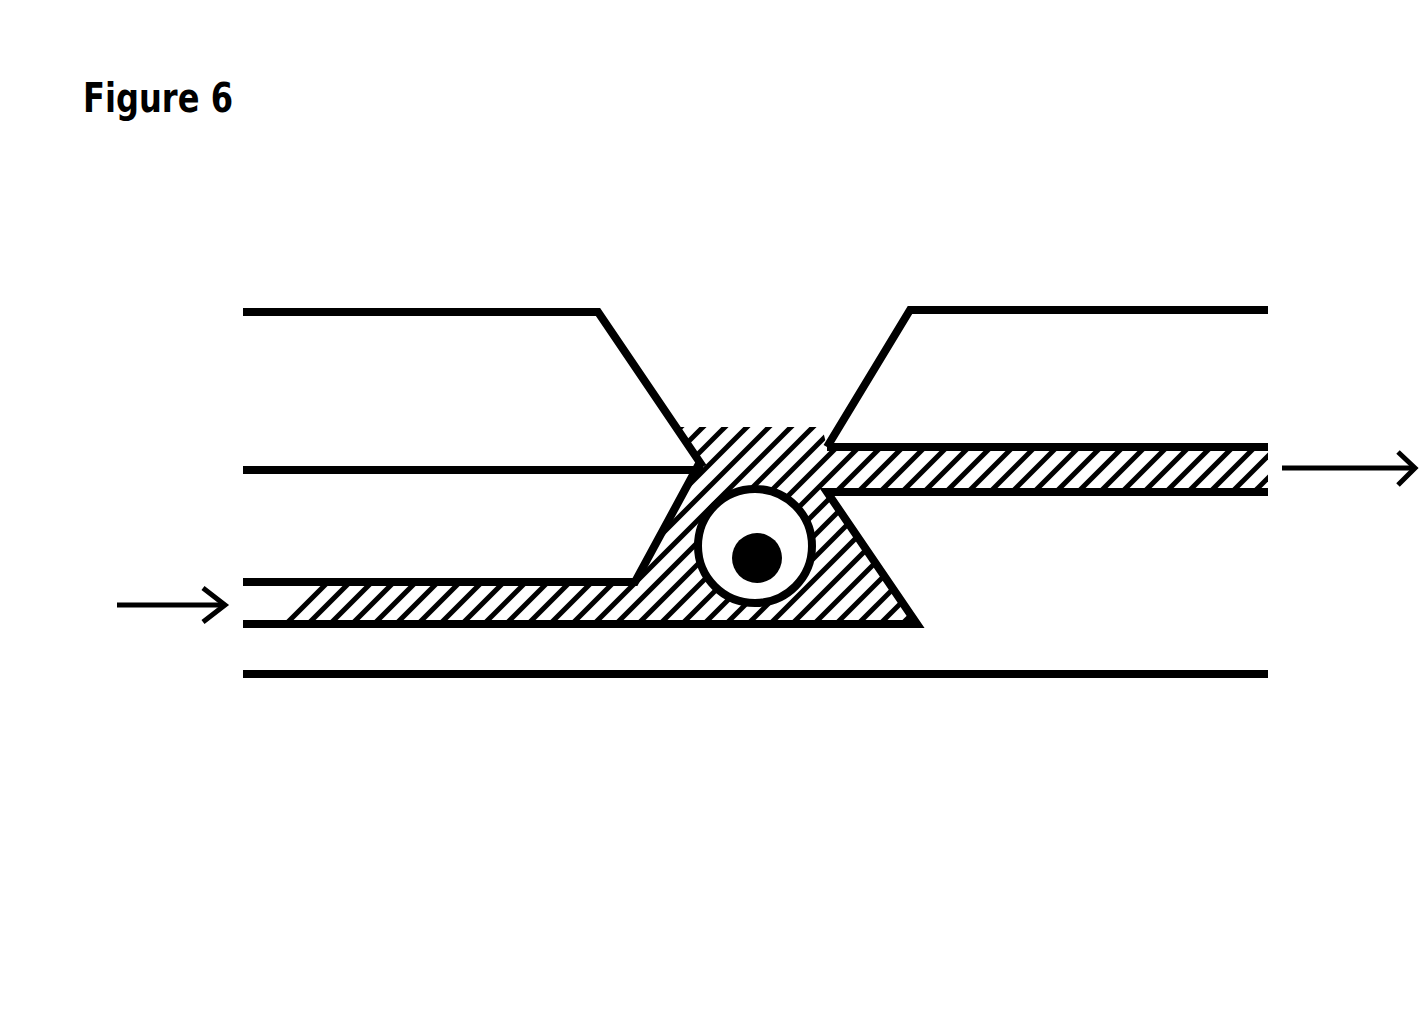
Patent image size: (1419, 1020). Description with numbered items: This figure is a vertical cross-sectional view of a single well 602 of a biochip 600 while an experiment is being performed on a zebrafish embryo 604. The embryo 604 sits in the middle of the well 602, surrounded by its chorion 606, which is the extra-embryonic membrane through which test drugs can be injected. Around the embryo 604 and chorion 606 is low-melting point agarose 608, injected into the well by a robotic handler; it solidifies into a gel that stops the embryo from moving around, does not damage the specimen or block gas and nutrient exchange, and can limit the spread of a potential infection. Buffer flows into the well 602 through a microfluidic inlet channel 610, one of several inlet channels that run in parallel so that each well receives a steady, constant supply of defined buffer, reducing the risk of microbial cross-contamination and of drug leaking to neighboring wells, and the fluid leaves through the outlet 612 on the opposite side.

The biochip 600 is at (1103, 280).
The well 602 is at (685, 343).
The zebrafish embryo 604 is at (757, 560).
The chorion 606 is at (754, 489).
The low-melting point agarose 608 is at (787, 447).
The microfluidic inlet channel 610 is at (166, 605).
The outlet flow 612 is at (1348, 466).